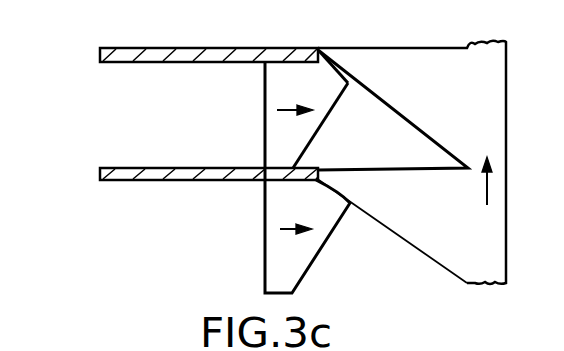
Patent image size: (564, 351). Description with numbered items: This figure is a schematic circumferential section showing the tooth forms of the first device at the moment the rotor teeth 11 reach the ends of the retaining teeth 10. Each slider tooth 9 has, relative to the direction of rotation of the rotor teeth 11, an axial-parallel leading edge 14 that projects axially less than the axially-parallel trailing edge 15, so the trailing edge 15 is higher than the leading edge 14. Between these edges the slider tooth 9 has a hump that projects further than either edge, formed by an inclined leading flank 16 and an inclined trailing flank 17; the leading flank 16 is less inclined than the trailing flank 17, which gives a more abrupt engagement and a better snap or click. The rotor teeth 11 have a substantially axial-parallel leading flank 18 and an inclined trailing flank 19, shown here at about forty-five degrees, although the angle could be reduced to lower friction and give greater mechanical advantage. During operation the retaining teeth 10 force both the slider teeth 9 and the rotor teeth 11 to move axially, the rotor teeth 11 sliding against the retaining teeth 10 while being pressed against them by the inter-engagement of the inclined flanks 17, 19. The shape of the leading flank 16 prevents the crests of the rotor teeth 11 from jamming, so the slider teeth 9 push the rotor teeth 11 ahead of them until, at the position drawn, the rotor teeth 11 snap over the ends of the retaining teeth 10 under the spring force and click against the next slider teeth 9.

The slider teeth 9 is at (277, 110).
The retaining teeth 10 is at (157, 48).
The rotor teeth 11 is at (417, 215).
The leading edge 14 is at (274, 168).
The trailing edge 15 is at (305, 48).
The leading flank 16 is at (322, 133).
The trailing flank 17 is at (337, 66).
The leading flank 18 is at (410, 48).
The trailing flank 19 is at (412, 138).